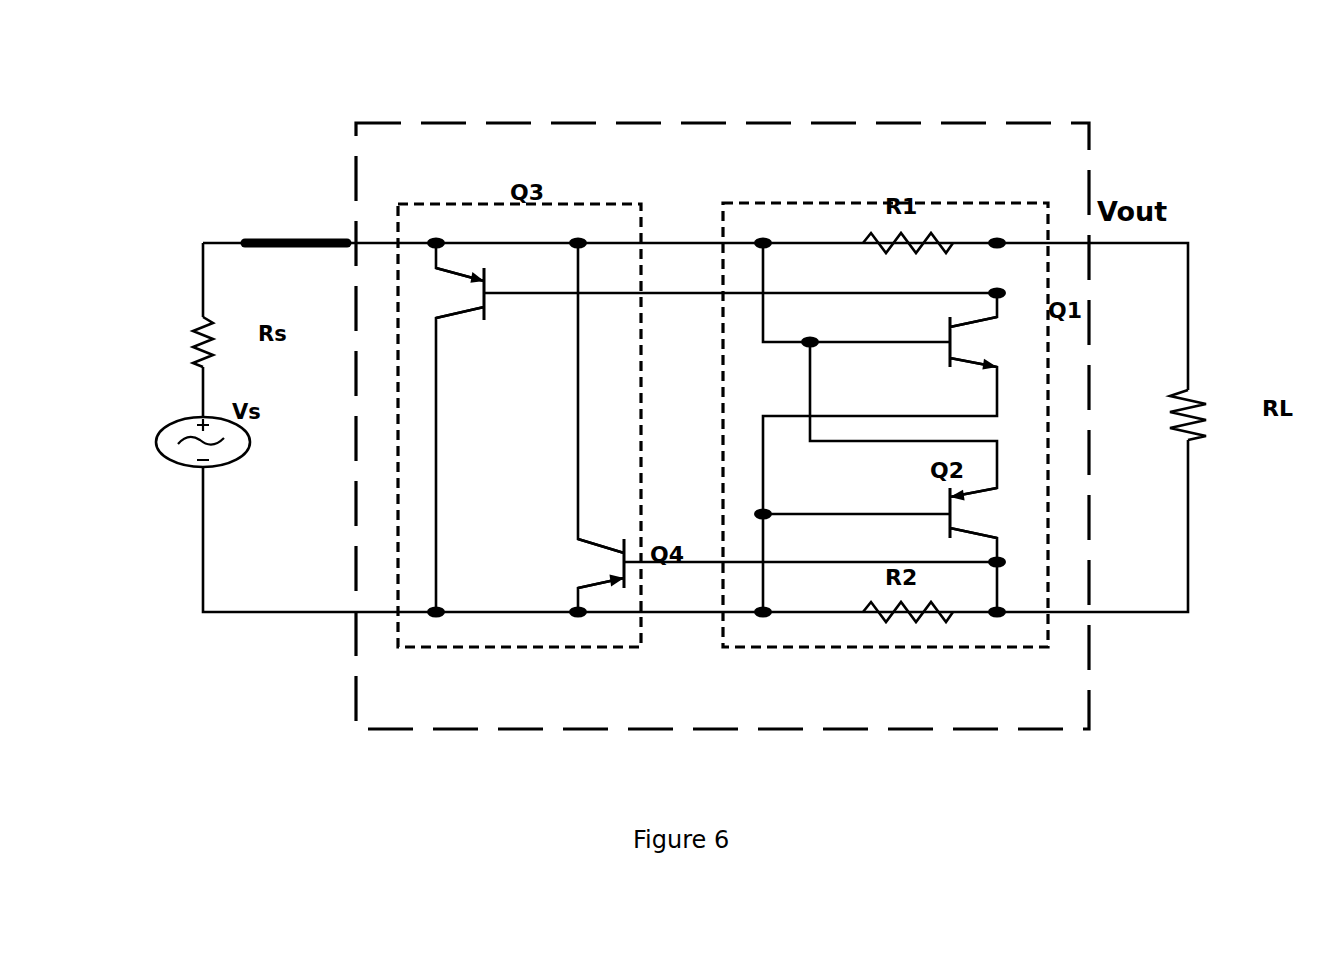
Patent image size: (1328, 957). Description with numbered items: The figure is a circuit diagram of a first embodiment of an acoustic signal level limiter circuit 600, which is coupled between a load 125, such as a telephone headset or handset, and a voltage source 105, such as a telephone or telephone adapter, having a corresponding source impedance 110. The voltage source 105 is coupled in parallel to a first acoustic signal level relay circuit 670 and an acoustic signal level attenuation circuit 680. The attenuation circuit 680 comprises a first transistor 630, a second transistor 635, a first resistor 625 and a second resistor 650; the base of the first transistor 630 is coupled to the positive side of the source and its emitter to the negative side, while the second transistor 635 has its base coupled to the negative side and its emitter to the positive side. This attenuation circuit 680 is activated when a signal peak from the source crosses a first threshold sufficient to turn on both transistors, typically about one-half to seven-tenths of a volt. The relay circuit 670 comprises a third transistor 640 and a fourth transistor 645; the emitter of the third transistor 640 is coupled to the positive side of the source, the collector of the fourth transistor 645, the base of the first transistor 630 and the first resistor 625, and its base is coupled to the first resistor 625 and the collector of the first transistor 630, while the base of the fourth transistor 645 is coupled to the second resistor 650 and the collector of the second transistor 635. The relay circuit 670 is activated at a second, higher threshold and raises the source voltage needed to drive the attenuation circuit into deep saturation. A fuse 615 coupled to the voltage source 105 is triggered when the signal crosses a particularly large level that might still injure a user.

The acoustic signal level limiter circuit 600 is at (995, 118).
The fuse 615 is at (245, 240).
The source impedance 110 is at (190, 338).
The voltage source 105 is at (159, 439).
The first acoustic signal level relay circuit 670 is at (575, 204).
The third transistor 640 is at (488, 281).
The fourth transistor 645 is at (638, 533).
The acoustic signal level attenuation circuit 680 is at (953, 202).
The first resistor 625 is at (866, 236).
The first transistor 630 is at (946, 326).
The second transistor 635 is at (946, 498).
The second resistor 650 is at (866, 604).
The load 125 is at (1172, 415).